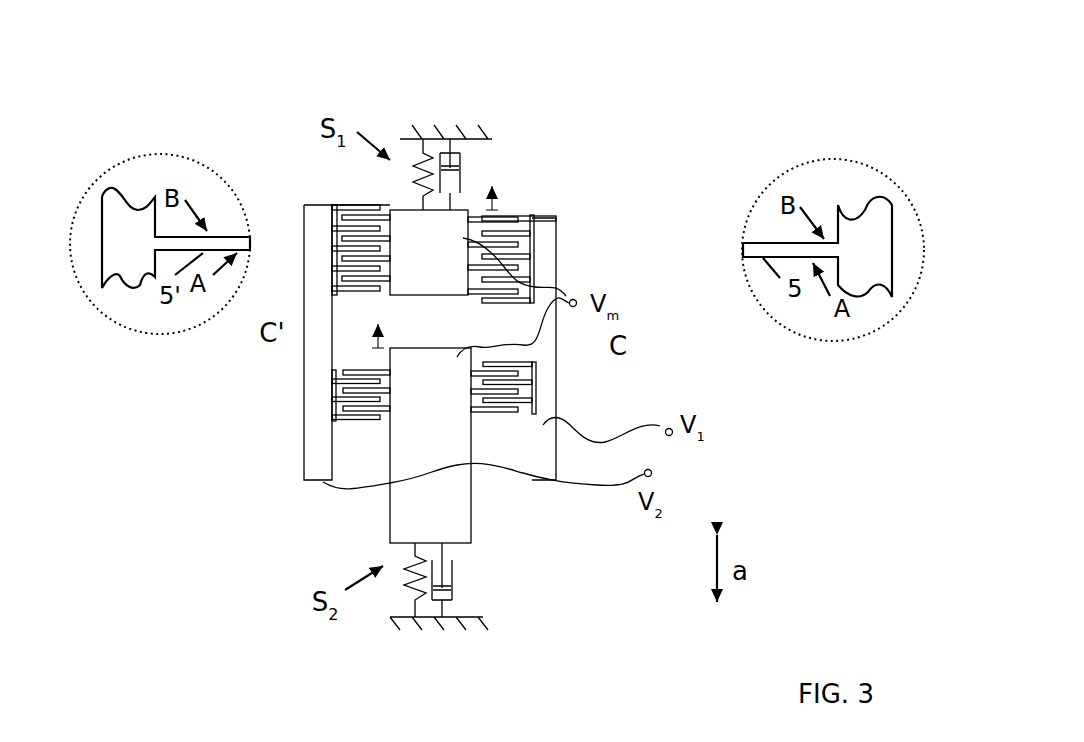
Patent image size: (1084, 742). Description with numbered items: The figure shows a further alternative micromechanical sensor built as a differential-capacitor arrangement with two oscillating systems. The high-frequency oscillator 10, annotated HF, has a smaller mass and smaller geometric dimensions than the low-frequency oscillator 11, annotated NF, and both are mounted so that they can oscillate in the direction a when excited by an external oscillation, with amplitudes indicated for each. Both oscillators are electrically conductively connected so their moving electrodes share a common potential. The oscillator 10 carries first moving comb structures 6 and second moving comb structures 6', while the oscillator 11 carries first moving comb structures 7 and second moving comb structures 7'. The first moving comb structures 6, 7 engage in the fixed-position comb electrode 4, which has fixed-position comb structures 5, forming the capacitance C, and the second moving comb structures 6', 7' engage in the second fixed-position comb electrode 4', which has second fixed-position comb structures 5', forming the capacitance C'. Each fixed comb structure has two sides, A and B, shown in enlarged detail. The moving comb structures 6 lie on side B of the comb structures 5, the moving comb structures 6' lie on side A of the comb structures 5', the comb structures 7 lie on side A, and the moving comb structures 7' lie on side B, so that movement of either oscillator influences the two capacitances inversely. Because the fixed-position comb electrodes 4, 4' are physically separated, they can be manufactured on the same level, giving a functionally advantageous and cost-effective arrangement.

The fixed-position comb electrode 4 is at (575, 339).
The second fixed-position comb electrode 4' is at (315, 344).
The fixed-position comb structures 5 is at (533, 198).
The second fixed-position comb structures 5' is at (310, 407).
The moving comb structures 6 is at (526, 225).
The second moving comb structures 6' is at (314, 222).
The moving comb structures 7 is at (517, 454).
The second moving comb structures 7' is at (310, 393).
The oscillator 10 is at (408, 208).
The oscillator 11 is at (390, 500).